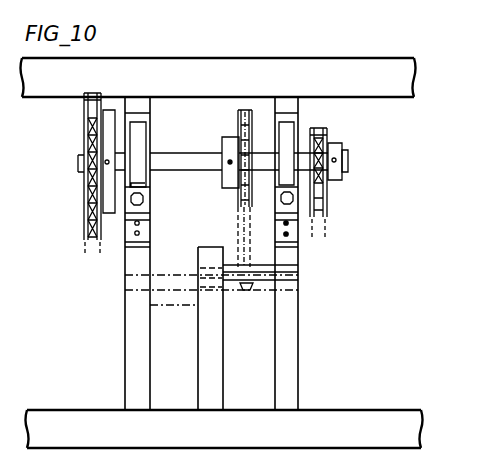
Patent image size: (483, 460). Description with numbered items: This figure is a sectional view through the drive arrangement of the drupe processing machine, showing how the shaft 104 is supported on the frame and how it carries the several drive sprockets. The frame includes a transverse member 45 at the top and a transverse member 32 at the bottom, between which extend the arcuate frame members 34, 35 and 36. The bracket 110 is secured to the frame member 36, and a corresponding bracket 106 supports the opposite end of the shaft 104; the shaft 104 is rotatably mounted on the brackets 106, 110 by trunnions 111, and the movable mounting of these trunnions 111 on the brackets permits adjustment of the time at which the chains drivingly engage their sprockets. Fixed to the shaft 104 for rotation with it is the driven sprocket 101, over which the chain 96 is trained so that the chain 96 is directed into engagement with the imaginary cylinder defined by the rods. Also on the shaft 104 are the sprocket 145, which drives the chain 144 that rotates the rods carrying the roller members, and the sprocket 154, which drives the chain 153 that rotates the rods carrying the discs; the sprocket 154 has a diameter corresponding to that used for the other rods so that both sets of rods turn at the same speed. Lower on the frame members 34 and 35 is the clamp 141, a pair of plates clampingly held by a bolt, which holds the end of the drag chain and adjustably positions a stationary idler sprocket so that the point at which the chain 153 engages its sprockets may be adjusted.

The transverse member 32 is at (356, 417).
The arcuate frame member 34 is at (292, 355).
The arcuate frame member 35 is at (220, 351).
The arcuate frame member 36 is at (126, 344).
The transverse member 45 is at (416, 88).
The chain 96 is at (326, 212).
The driven sprocket 101 is at (338, 182).
The shaft 104 is at (349, 160).
The bracket 106 is at (288, 105).
The bracket 110 is at (147, 110).
The trunnion 111 is at (280, 194).
The clamp 141 is at (247, 307).
The driven chain 144 is at (87, 210).
The sprocket 145 is at (85, 240).
The driven chain 153 is at (238, 233).
The sprocket 154 is at (239, 113).